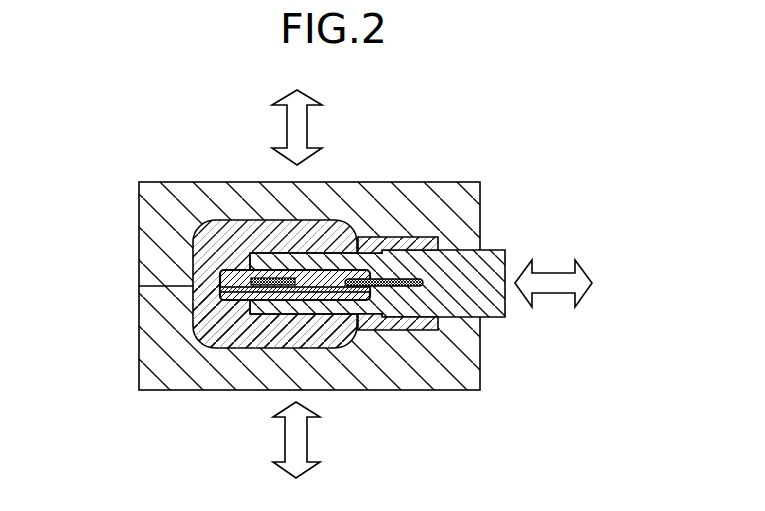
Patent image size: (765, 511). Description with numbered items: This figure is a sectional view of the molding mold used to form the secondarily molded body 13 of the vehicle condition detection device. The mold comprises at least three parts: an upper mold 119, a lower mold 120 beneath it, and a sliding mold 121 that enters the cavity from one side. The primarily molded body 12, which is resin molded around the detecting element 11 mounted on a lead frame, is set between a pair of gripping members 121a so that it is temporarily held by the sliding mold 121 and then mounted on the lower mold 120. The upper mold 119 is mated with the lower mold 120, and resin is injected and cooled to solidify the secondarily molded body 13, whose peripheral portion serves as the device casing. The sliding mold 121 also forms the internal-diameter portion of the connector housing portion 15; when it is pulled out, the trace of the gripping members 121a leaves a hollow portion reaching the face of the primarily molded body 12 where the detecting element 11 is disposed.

The detecting element 11 is at (263, 257).
The primarily molded body 12 is at (222, 282).
The secondarily molded body 13 is at (210, 325).
The connector housing portion 15 is at (420, 242).
The upper mold 119 is at (182, 190).
The lower mold 120 is at (181, 376).
The sliding mold 121 is at (485, 263).
The gripping member 121a is at (284, 257).